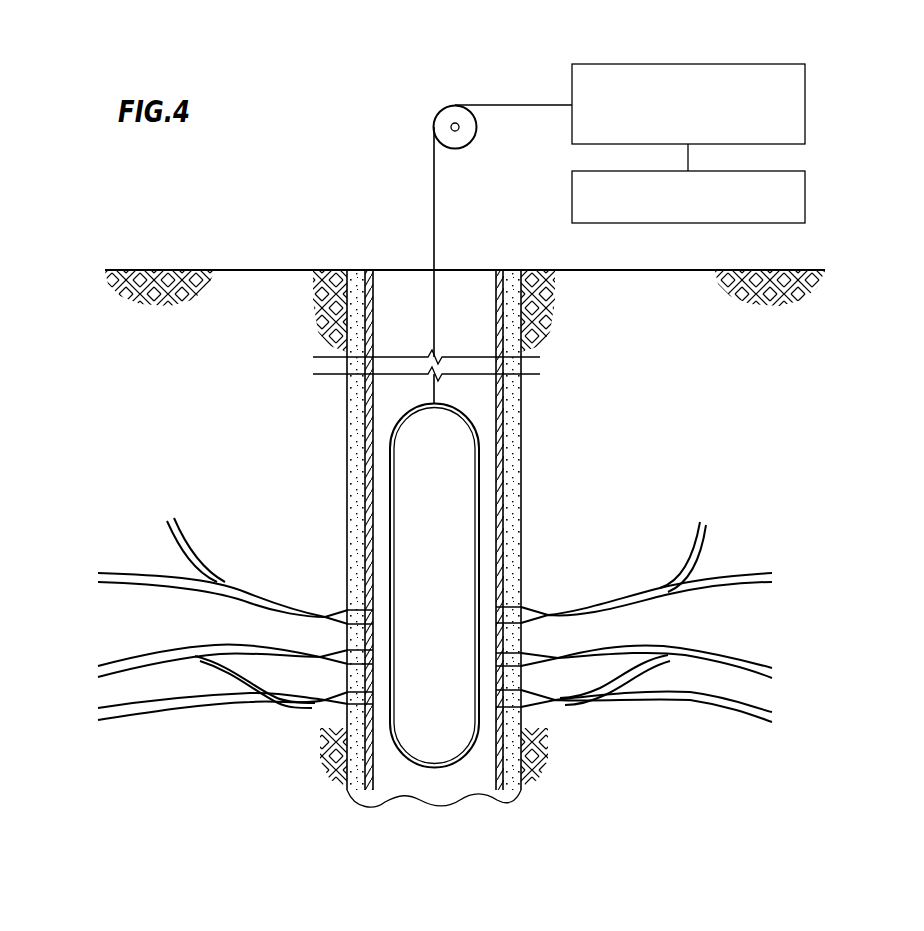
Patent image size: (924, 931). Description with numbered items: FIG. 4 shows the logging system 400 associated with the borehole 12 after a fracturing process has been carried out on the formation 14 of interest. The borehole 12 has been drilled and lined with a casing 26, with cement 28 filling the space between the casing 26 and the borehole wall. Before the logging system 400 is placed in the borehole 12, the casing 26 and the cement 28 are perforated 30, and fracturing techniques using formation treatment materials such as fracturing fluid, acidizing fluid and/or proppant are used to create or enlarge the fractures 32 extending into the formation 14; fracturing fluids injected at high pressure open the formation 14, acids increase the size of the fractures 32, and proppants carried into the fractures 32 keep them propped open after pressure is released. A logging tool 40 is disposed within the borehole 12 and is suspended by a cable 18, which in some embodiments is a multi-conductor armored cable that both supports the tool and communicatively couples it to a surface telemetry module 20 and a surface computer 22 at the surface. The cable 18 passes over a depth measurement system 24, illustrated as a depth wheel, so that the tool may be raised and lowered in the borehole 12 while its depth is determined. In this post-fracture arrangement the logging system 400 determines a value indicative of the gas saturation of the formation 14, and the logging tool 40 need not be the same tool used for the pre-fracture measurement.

The logging system 400 is at (343, 164).
The surface telemetry module 20 is at (808, 92).
The surface computer 22 is at (808, 196).
The depth measurement system 24 is at (470, 146).
The cable 18 is at (435, 210).
The borehole 12 is at (421, 311).
The formation 14 is at (608, 569).
The cement 28 is at (350, 317).
The casing 26 is at (507, 524).
The logging tool 40 is at (486, 416).
The perforations 30 is at (333, 706).
The fractures 32 is at (134, 572).